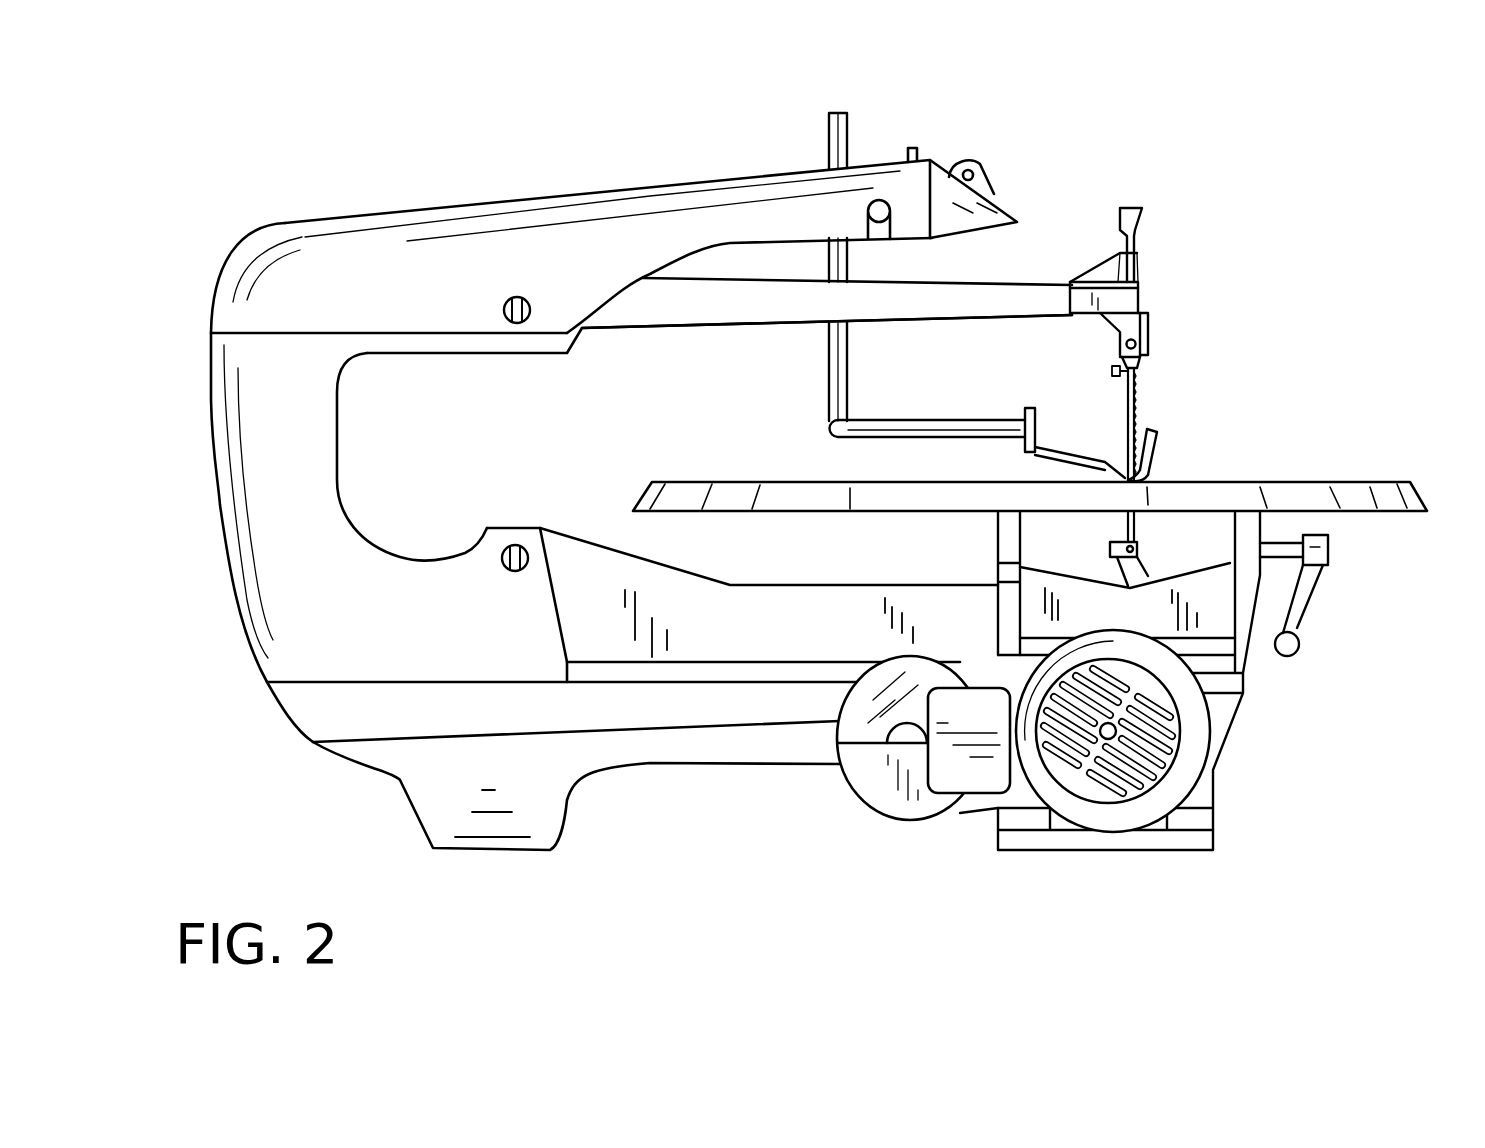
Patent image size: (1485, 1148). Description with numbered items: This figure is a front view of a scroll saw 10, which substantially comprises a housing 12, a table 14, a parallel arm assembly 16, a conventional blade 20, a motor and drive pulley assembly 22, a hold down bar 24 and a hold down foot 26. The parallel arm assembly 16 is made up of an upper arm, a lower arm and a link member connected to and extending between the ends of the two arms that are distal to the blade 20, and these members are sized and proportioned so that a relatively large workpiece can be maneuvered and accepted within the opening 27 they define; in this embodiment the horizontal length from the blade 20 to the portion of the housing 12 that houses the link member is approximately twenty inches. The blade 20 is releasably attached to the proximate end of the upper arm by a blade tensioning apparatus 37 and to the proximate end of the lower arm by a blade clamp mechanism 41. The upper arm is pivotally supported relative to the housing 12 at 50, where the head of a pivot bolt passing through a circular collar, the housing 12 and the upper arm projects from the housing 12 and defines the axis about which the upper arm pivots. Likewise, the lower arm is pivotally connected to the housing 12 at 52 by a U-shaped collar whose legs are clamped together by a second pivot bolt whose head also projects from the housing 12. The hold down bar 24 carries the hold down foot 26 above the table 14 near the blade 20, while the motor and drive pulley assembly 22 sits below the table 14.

The scroll saw 10 is at (1300, 285).
The housing 12 is at (688, 187).
The table 14 is at (1378, 479).
The parallel arm assembly 16 is at (1016, 286).
The blade 20 is at (1138, 407).
The motor and drive pulley assembly 22 is at (1199, 743).
The hold down bar 24 is at (918, 419).
The hold down foot 26 is at (1160, 452).
The opening 27 is at (658, 400).
The blade tensioning apparatus 37 is at (1140, 268).
The blade clamp mechanism 41 is at (1137, 583).
The upper arm pivot 50 is at (506, 301).
The lower arm pivot 52 is at (503, 554).